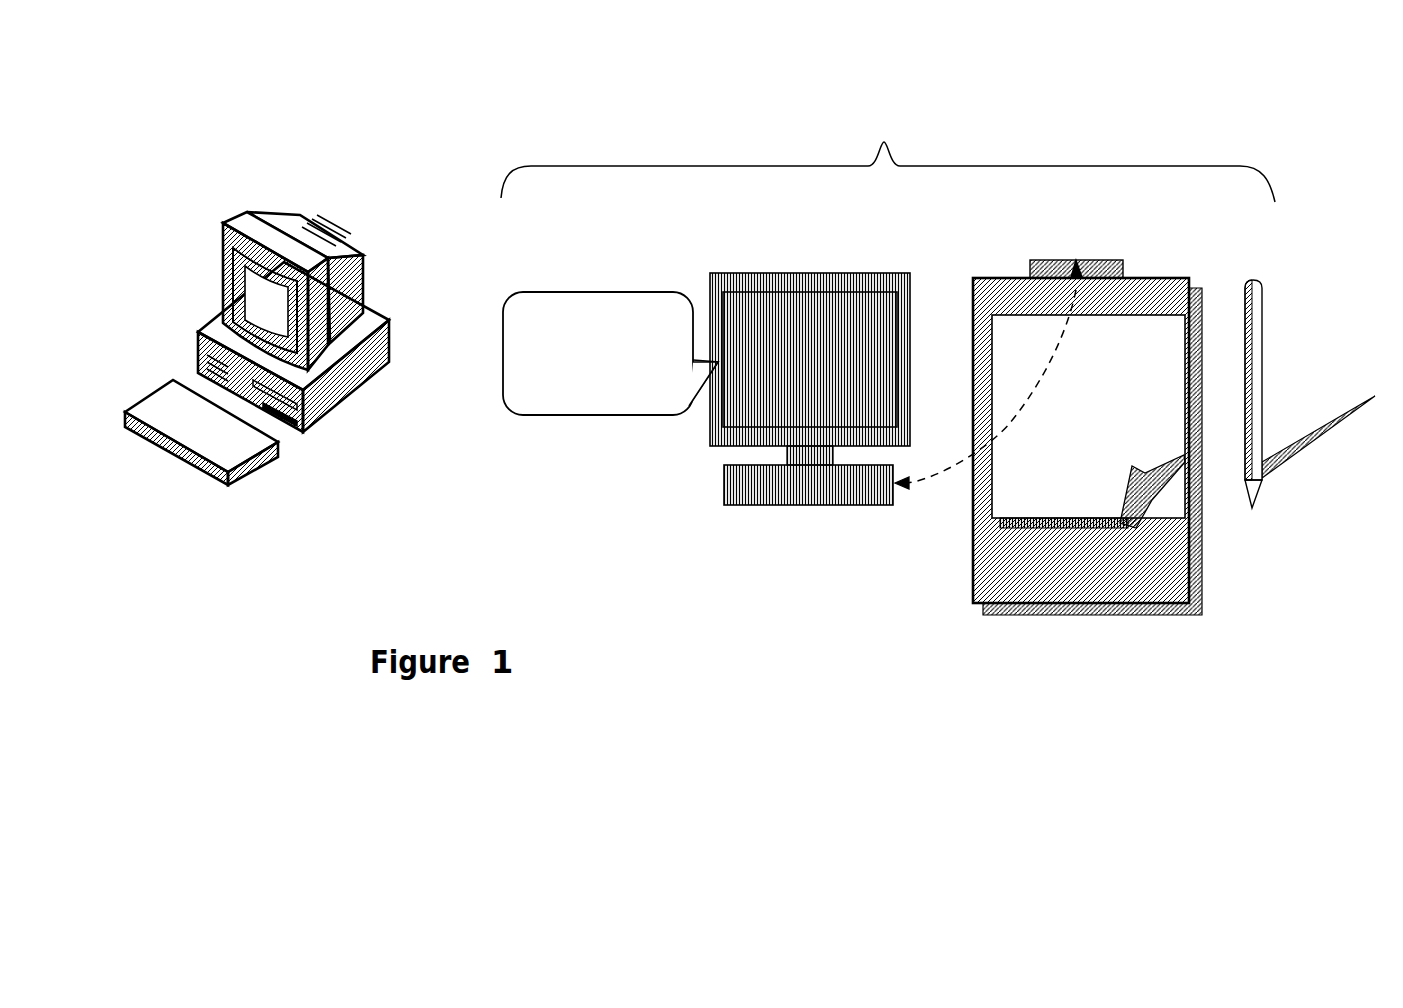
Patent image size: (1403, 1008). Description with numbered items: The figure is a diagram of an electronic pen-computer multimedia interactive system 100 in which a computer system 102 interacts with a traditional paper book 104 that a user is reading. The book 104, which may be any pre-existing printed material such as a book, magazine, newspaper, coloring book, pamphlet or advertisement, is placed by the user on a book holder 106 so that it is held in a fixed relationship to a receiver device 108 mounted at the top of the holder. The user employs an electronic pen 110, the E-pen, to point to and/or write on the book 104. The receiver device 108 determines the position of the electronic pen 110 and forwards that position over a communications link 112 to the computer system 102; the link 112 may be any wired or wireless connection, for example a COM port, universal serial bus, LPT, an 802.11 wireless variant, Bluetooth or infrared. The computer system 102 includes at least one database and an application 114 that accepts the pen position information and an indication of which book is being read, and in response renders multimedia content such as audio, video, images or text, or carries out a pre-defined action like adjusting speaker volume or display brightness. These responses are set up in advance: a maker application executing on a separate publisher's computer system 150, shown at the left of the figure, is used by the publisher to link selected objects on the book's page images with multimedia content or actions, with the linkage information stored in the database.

The electronic pen-computer multimedia interactive system 100 is at (880, 138).
The computer system 102 is at (795, 514).
The paper book 104 is at (1080, 508).
The book holder 106 is at (1070, 617).
The receiver device 108 is at (1025, 265).
The electronic pen 110 is at (1253, 517).
The communications link 112 is at (922, 485).
The database and application 114 is at (563, 418).
The publisher's computer system 150 is at (372, 188).